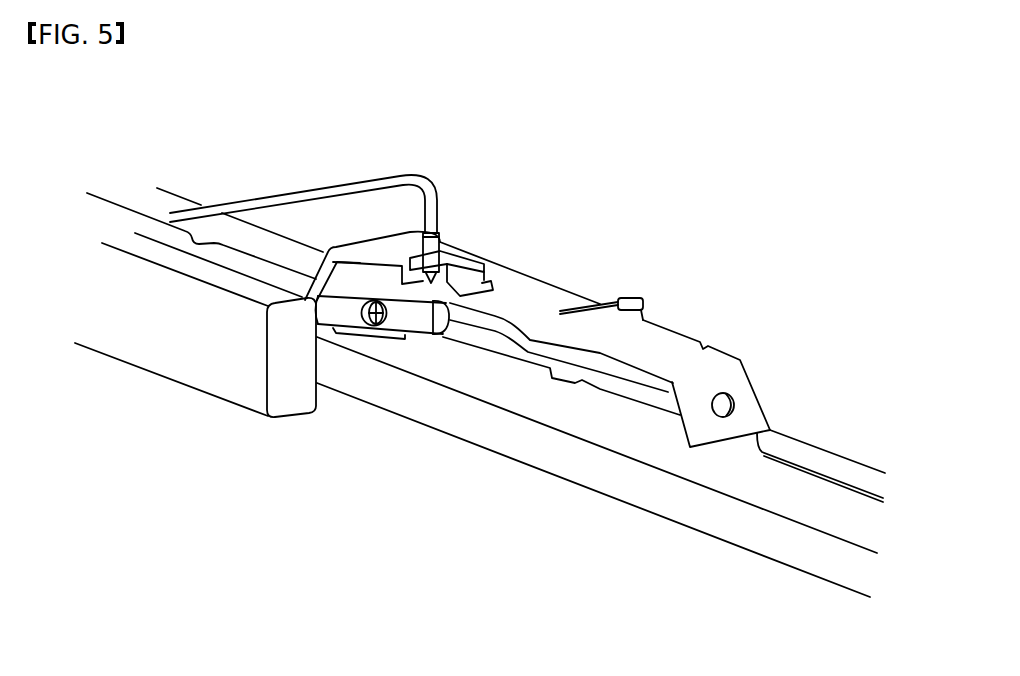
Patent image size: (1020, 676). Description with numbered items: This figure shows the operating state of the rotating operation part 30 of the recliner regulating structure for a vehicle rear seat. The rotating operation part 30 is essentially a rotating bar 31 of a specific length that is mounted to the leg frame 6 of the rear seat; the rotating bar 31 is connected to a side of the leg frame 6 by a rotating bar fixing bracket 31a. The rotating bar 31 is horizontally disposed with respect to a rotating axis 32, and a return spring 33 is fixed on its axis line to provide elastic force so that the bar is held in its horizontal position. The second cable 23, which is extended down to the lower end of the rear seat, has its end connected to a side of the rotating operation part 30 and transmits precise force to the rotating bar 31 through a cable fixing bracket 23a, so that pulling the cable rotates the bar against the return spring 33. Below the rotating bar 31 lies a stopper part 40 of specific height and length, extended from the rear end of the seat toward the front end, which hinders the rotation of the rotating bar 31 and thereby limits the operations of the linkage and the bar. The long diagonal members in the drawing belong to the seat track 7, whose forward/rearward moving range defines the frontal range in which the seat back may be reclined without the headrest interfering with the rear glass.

The leg frame 6 is at (538, 295).
The seat track 7 is at (783, 497).
The second cable 23 is at (323, 187).
The cable fixing bracket 23a is at (490, 268).
The rotating operation part 30 is at (372, 424).
The rotating bar 31 is at (424, 337).
The rotating bar fixing bracket 31a is at (452, 251).
The rotating axis 32 is at (390, 332).
The return spring 33 is at (358, 324).
The stopper part 40 is at (177, 353).